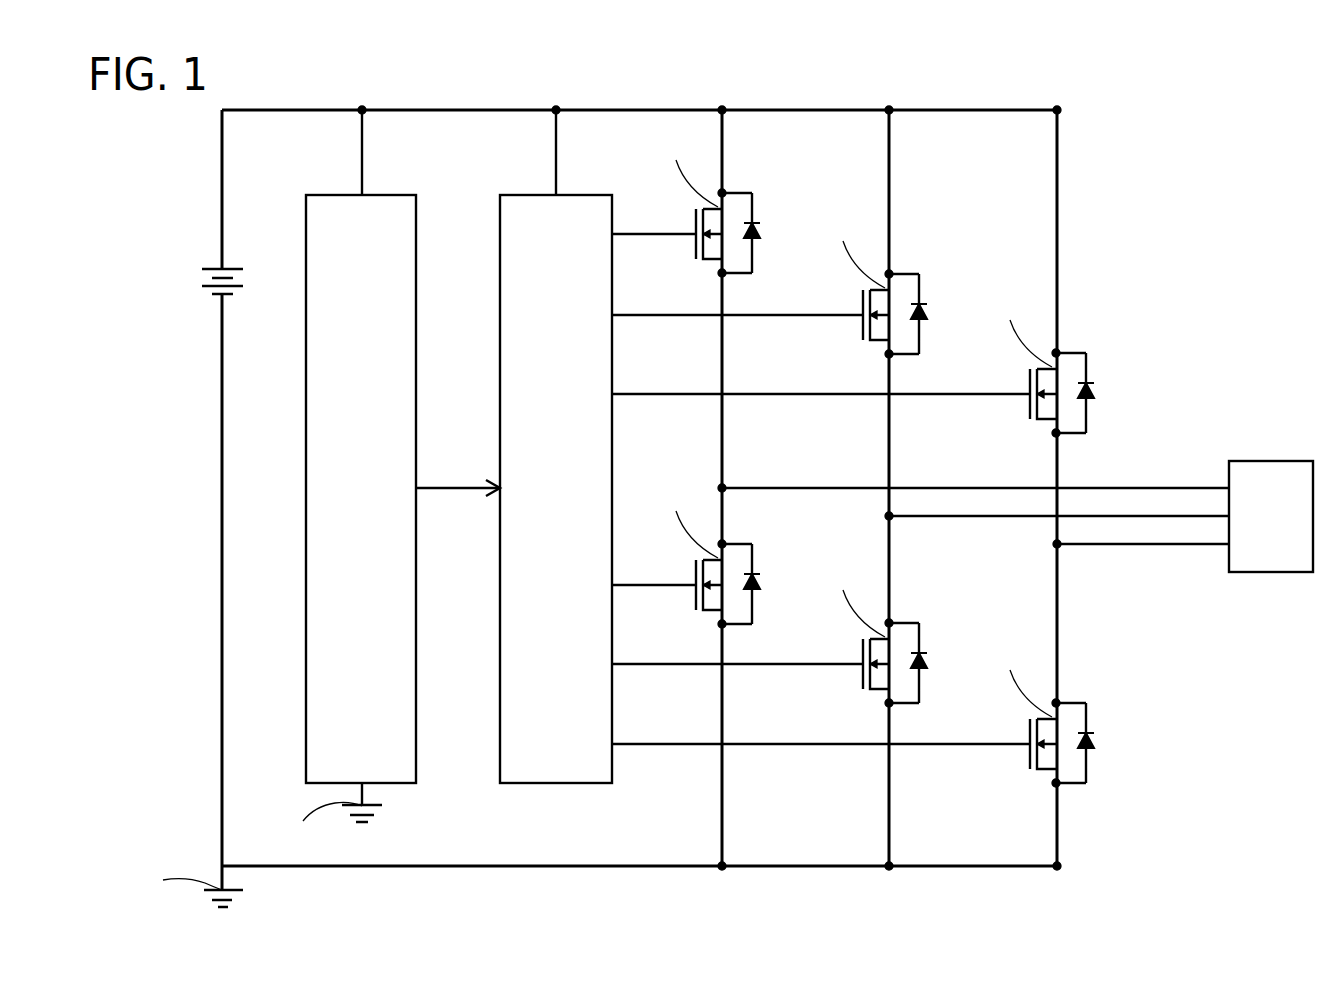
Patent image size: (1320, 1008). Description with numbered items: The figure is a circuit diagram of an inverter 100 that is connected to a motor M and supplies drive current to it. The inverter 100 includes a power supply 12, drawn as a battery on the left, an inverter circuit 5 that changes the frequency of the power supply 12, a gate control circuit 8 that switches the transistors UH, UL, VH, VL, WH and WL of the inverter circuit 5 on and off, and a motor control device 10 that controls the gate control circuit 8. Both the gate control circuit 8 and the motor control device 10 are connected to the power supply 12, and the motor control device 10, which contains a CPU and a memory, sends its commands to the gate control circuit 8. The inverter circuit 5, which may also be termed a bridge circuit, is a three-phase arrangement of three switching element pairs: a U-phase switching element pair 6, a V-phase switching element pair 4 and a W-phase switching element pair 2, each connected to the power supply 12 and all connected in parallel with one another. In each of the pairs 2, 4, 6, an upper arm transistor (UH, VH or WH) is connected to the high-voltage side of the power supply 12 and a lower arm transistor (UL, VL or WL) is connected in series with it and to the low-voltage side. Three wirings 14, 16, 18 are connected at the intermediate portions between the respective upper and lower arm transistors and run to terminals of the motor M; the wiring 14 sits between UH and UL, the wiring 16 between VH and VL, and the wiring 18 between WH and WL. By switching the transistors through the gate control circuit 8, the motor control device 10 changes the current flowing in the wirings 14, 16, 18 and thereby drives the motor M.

The inverter 100 is at (1194, 175).
The W-phase switching element pair 2 is at (1058, 165).
The V-phase switching element pair 4 is at (891, 165).
The inverter circuit 5 is at (1100, 56).
The U-phase switching element pair 6 is at (724, 165).
The gate control circuit 8 is at (590, 195).
The motor control device 10 is at (398, 195).
The power supply 12 is at (178, 260).
The wiring 14 is at (1107, 488).
The wiring 16 is at (1136, 516).
The wiring 18 is at (1165, 544).